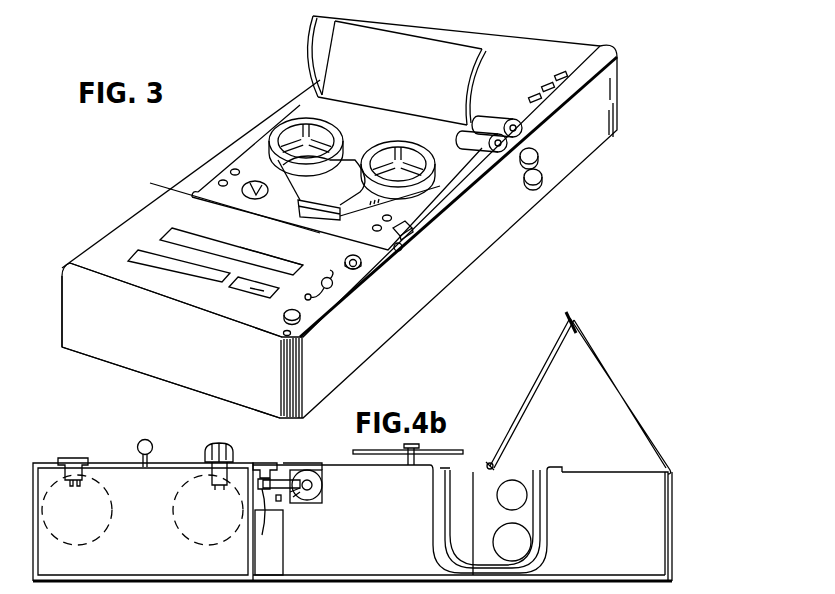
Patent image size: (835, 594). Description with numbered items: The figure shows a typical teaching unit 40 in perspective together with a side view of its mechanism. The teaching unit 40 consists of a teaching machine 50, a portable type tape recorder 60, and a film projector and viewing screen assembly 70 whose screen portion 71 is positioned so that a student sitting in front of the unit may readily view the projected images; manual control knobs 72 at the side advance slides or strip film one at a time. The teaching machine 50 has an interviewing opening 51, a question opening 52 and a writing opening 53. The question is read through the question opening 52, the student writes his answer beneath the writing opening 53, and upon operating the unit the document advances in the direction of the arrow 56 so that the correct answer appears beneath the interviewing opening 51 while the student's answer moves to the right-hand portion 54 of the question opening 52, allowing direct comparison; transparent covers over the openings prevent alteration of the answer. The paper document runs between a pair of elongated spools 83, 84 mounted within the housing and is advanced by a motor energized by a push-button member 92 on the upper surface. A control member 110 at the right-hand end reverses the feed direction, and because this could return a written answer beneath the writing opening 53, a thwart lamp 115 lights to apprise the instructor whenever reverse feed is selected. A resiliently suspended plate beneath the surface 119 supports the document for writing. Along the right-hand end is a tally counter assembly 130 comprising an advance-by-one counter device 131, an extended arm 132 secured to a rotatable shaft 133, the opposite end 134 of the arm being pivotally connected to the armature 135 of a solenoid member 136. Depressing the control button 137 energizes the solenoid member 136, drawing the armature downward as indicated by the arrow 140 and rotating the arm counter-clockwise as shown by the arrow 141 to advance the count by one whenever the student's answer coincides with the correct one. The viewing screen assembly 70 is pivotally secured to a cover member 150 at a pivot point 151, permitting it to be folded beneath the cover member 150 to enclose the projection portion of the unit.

In FIG. 3, the teaching unit 40 is at (514, 233).
In FIG. 3, the teaching machine 50 is at (125, 232).
In FIG. 3, the interviewing opening 51 is at (174, 268).
In FIG. 3, the question opening 52 is at (177, 238).
In FIG. 3, the writing opening 53 is at (228, 288).
In FIG. 3, the right-hand portion of window 54 is at (283, 265).
In FIG. 3, the arrow 56 is at (262, 283).
In FIG. 3, the tape recorder 60 is at (228, 150).
In FIG. 3, the film projector and viewing screen assembly 70 is at (306, 47).
In FIG. 4b, the film projector and viewing screen assembly 70 is at (542, 372).
In FIG. 3, the screen portion 71 is at (422, 84).
In FIG. 3, the manual control knobs 72 is at (545, 172).
In FIG. 4b, the spool 83 is at (87, 520).
In FIG. 4b, the spool 84 is at (221, 525).
In FIG. 3, the push-button member 92 is at (302, 320).
In FIG. 4b, the push-button member 92 is at (82, 458).
In FIG. 3, the control member 110 is at (339, 296).
In FIG. 4b, the control member 110 is at (137, 440).
In FIG. 3, the thwart lamp 115 is at (358, 266).
In FIG. 4b, the thwart lamp 115 is at (213, 443).
In FIG. 3, the surface of the teaching machine 119 is at (90, 258).
In FIG. 3, the tally counter assembly 130 is at (411, 235).
In FIG. 4b, the counter device 131 is at (323, 496).
In FIG. 4b, the extended arm 132 is at (296, 500).
In FIG. 4b, the rotatable shaft 133 is at (315, 486).
In FIG. 4b, the opposite end of arm 134 is at (268, 478).
In FIG. 4b, the armature 135 is at (264, 492).
In FIG. 4b, the solenoid member 136 is at (278, 557).
In FIG. 3, the control button 137 is at (402, 250).
In FIG. 4b, the control button 137 is at (267, 465).
In FIG. 4b, the arrow 140 is at (282, 501).
In FIG. 4b, the arrow 141 is at (286, 480).
In FIG. 4b, the cover member 150 is at (622, 390).
In FIG. 4b, the pivot point 151 is at (576, 322).